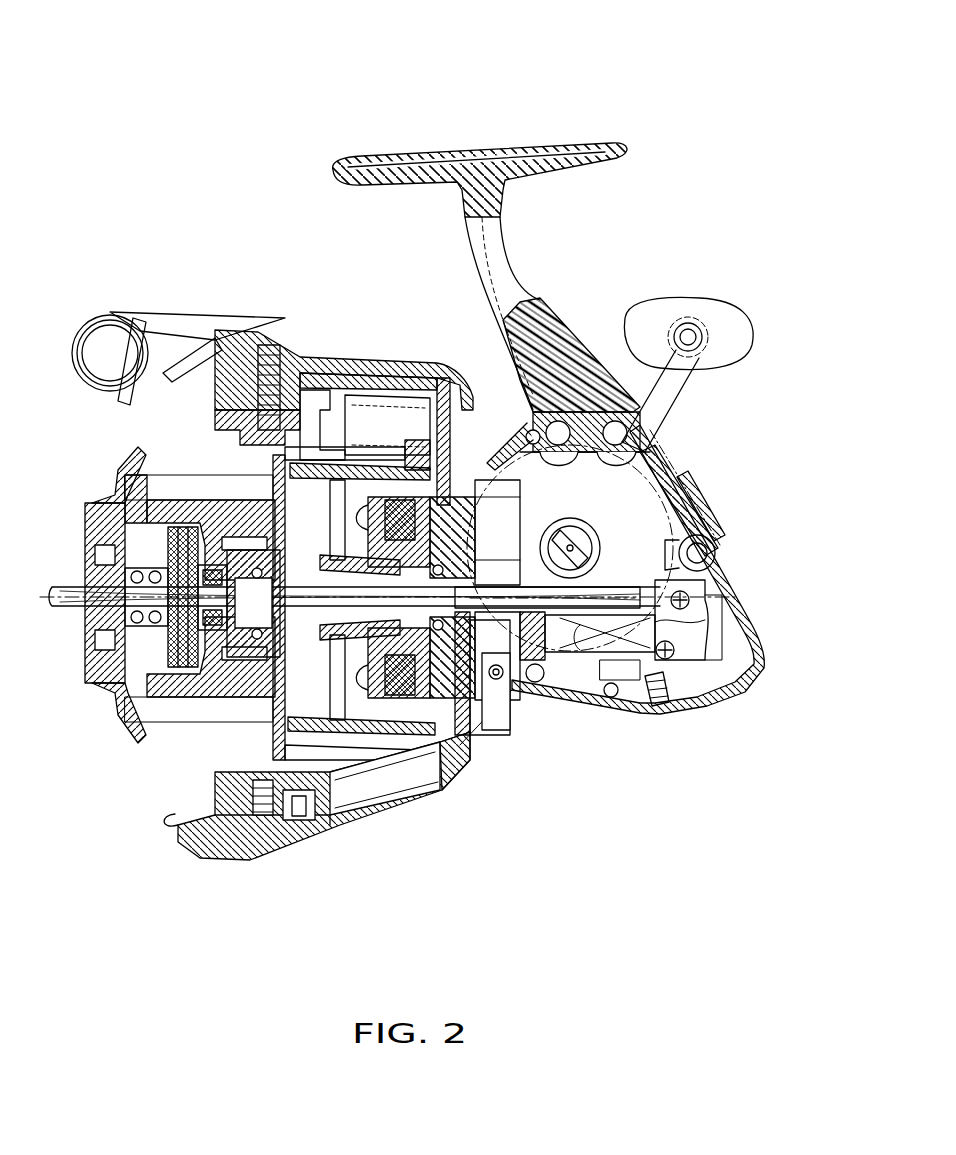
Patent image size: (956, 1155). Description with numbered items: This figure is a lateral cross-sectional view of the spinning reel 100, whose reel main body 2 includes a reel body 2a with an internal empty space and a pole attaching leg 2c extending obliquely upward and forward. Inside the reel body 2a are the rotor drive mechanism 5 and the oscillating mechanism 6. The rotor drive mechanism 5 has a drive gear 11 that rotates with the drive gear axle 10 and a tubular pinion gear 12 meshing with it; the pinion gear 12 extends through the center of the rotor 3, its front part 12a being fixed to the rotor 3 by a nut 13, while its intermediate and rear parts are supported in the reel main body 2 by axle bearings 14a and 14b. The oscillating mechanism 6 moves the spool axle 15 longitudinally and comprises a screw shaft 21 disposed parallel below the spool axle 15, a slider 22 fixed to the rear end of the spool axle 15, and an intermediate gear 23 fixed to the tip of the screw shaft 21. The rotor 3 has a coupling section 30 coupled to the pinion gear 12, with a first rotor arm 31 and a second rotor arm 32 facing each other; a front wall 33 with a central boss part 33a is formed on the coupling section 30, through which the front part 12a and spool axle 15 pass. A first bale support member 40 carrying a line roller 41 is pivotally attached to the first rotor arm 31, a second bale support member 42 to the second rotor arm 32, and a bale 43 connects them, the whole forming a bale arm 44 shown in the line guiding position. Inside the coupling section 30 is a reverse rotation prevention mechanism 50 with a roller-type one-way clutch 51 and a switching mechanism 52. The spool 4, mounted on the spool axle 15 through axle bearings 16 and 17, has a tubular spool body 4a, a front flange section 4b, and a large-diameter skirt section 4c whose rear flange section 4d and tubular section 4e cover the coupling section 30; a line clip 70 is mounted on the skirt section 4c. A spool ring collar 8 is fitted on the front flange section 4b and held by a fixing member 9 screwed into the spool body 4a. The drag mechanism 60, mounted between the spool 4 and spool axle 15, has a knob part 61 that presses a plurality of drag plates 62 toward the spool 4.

The spinning reel 100 is at (477, 127).
The reel main body 2 is at (745, 704).
The reel body 2a is at (715, 562).
The pole attaching leg 2c is at (505, 247).
The rotor 3 is at (330, 848).
The spool 4 is at (182, 470).
The spool body 4a is at (210, 507).
The front flange section 4b is at (146, 470).
The skirt section 4c is at (348, 440).
The rear flange section 4d is at (262, 405).
The tubular section 4e is at (362, 458).
The rotor drive mechanism 5 is at (668, 468).
The oscillating mechanism 6 is at (630, 708).
The spool ring collar 8 is at (128, 745).
The fixing member 9 is at (108, 490).
The drive gear axle 10 is at (615, 520).
The drive gear 11 is at (622, 484).
The pinion gear 12 is at (533, 425).
The front part of the pinion gear 12a is at (342, 552).
The nut 13 is at (322, 640).
The axle bearing 14a is at (432, 780).
The axle bearing 14b is at (536, 690).
The spool axle 15 is at (385, 740).
The axle bearing 16 is at (203, 680).
The axle bearing 17 is at (253, 667).
The screw shaft 21 is at (612, 699).
The slider 22 is at (690, 703).
The intermediate gear 23 is at (490, 740).
The coupling section 30 is at (353, 828).
The first rotor arm 31 is at (318, 395).
The second rotor arm 32 is at (295, 830).
The front wall 33 is at (352, 520).
The boss part 33a is at (410, 435).
The first bale support member 40 is at (200, 325).
The line roller 41 is at (108, 316).
The second bale support member 42 is at (220, 840).
The bale 43 is at (137, 382).
The bale arm 44 is at (88, 395).
The reverse rotation prevention mechanism 50 is at (468, 445).
The one-way clutch 51 is at (490, 575).
The switching mechanism 52 is at (520, 745).
The drag mechanism 60 is at (173, 697).
The knob part 61 is at (68, 612).
The drag plates 62 is at (195, 667).
The line clip 70 is at (275, 440).